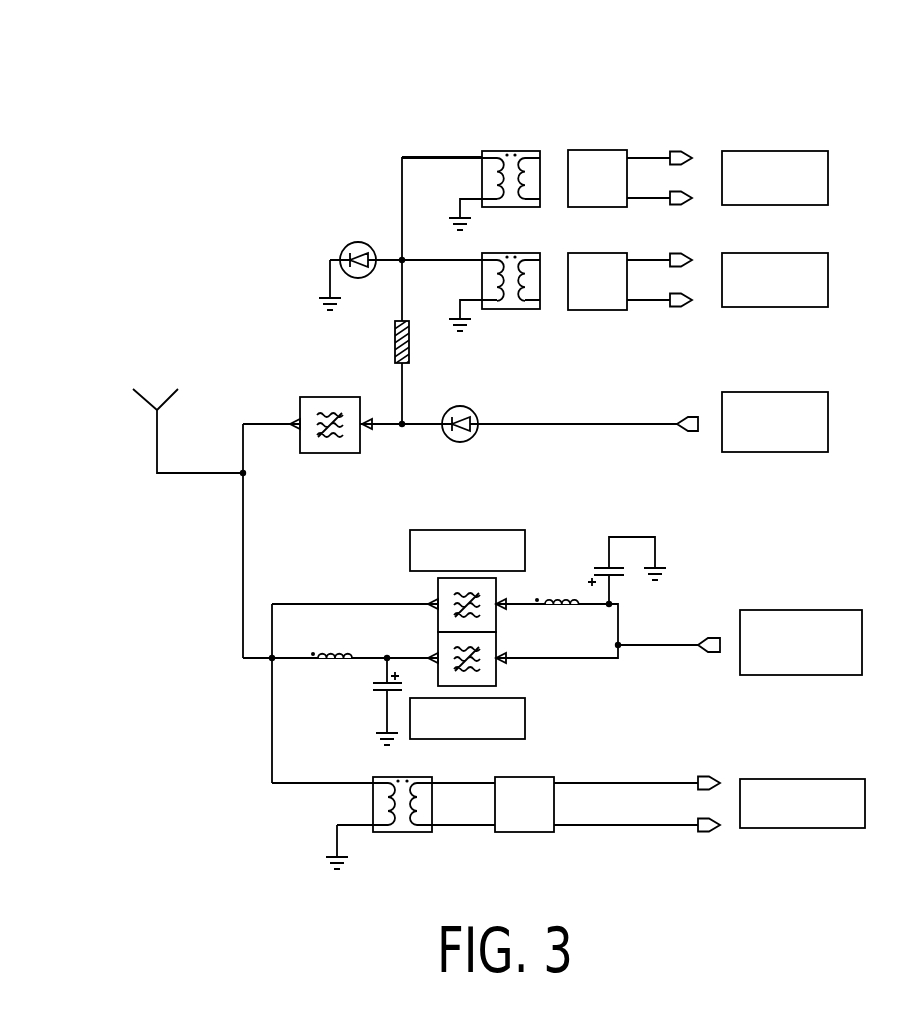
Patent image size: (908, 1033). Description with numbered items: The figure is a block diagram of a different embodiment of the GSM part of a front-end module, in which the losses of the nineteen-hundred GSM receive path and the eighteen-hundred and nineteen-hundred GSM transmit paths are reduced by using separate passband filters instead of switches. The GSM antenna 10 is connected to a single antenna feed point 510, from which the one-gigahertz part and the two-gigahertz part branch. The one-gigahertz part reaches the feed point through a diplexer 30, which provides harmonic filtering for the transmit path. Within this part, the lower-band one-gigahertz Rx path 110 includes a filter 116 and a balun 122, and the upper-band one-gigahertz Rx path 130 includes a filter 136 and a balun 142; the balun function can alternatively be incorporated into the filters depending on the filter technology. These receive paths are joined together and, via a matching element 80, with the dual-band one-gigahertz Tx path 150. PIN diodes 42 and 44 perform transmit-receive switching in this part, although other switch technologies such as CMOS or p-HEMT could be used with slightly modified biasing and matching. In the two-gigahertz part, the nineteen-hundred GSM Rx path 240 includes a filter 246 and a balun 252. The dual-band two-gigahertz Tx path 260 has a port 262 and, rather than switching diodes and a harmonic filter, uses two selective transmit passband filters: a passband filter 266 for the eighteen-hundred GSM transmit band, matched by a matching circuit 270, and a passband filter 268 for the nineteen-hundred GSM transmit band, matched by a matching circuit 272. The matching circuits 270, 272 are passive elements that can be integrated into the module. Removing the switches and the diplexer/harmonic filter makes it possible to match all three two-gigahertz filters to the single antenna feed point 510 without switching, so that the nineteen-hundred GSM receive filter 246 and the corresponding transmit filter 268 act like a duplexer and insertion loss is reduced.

The GSM antenna 10 is at (155, 443).
The diplexer 30 is at (336, 397).
The PIN diode 42 is at (360, 243).
The PIN diode 44 is at (460, 442).
The matching element 80 is at (410, 345).
The 869-894 MHz Rx path 110 is at (703, 148).
The filter 116 is at (596, 150).
The balun 122 is at (513, 150).
The 925-960 MHz Rx path 130 is at (703, 250).
The filter 136 is at (594, 310).
The balun 142 is at (513, 310).
The 824-849/880-905 MHz Tx path 150 is at (707, 393).
The 1930-1990 MHz Rx path 240 is at (731, 771).
The filter 246 is at (523, 832).
The balun 252 is at (401, 832).
The 1710-1785/1850-1910 MHz Tx path 260 is at (731, 611).
The port 262 is at (712, 652).
The passband filter 266 is at (437, 590).
The passband filter 268 is at (497, 677).
The matching circuit 270 is at (581, 586).
The matching circuit 272 is at (356, 675).
The antenna feed point 510 is at (246, 477).